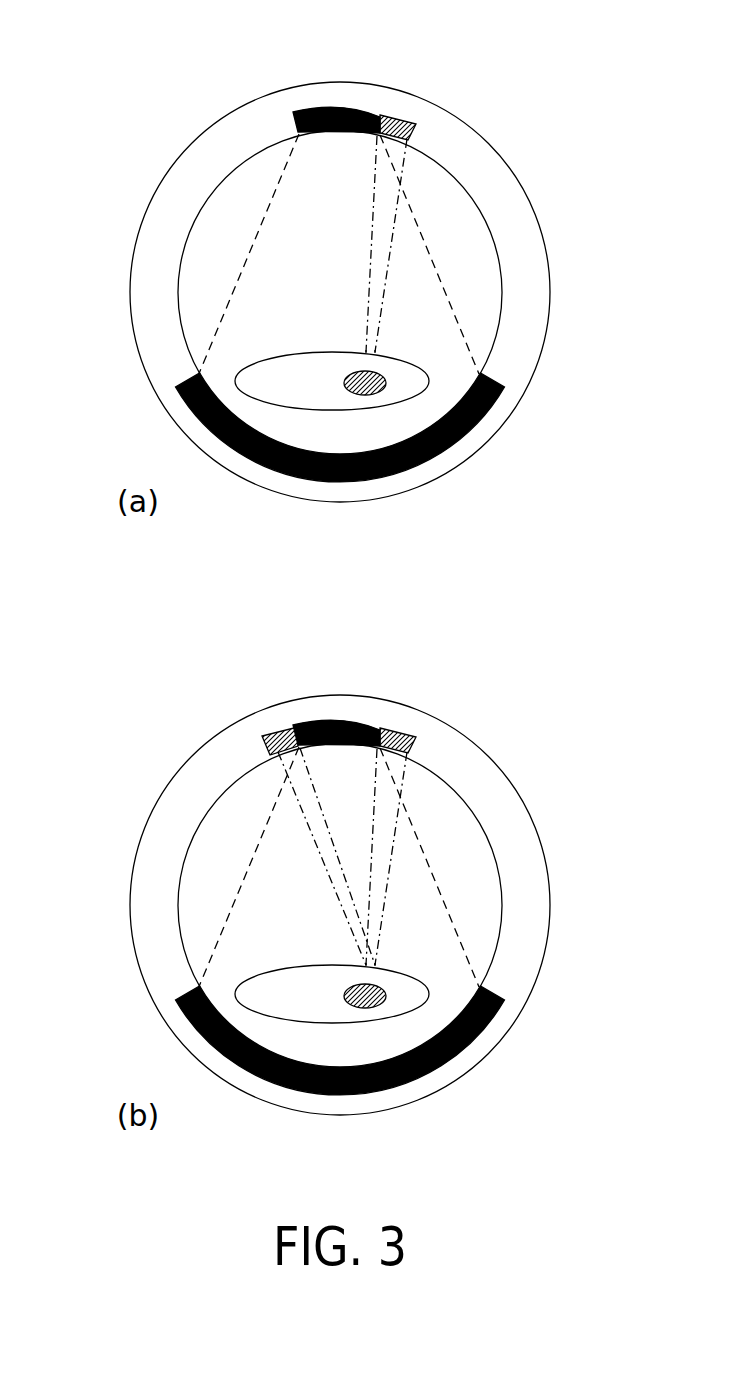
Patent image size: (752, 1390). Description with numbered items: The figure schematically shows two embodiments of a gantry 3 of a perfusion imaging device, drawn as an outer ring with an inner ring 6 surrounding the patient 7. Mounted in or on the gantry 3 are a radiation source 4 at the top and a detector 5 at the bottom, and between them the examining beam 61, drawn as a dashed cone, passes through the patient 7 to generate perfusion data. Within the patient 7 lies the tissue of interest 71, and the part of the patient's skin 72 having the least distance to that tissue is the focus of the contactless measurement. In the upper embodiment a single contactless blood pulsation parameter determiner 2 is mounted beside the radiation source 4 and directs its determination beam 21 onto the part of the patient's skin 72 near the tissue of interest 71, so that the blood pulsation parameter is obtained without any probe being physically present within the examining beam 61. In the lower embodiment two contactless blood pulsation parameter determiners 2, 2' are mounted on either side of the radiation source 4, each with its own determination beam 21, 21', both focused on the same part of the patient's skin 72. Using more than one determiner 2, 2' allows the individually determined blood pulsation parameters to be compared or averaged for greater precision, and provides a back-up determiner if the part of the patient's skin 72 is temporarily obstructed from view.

The contactless blood pulsation parameter determiner 2 is at (412, 387).
The second contactless blood pulsation parameter determiner 2' is at (266, 694).
The determination beam 21 is at (494, 550).
The second determination beam 21' is at (212, 856).
The gantry 3 is at (235, 142).
The radiation source 4 is at (343, 107).
The detector 5 is at (325, 482).
The inner housing 6 is at (237, 205).
The examining beam 61 is at (293, 270).
The patient 7 is at (292, 378).
The tissue of interest 71 is at (358, 371).
The part of the patient's skin 72 is at (375, 345).